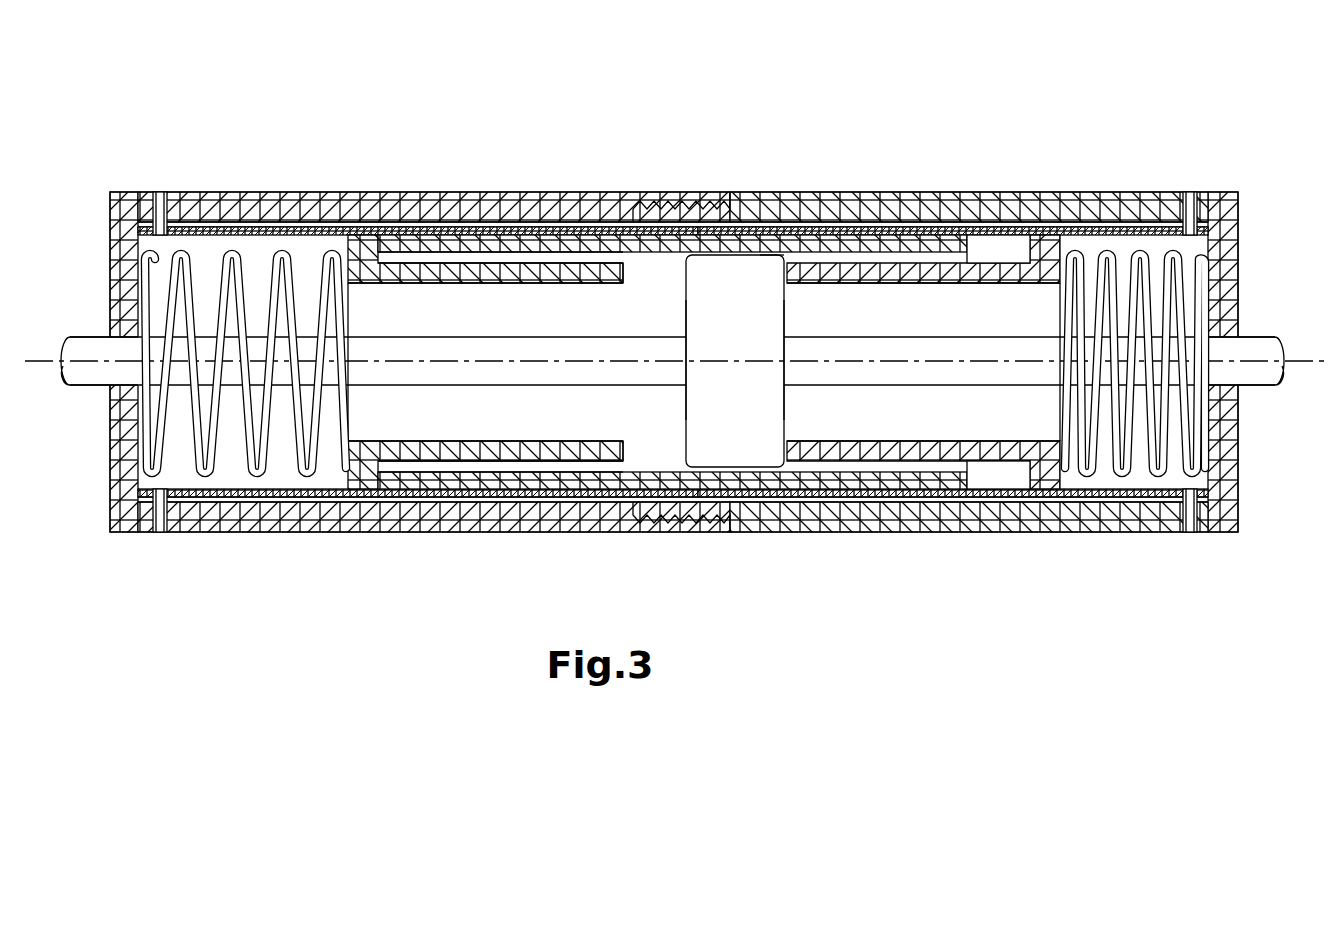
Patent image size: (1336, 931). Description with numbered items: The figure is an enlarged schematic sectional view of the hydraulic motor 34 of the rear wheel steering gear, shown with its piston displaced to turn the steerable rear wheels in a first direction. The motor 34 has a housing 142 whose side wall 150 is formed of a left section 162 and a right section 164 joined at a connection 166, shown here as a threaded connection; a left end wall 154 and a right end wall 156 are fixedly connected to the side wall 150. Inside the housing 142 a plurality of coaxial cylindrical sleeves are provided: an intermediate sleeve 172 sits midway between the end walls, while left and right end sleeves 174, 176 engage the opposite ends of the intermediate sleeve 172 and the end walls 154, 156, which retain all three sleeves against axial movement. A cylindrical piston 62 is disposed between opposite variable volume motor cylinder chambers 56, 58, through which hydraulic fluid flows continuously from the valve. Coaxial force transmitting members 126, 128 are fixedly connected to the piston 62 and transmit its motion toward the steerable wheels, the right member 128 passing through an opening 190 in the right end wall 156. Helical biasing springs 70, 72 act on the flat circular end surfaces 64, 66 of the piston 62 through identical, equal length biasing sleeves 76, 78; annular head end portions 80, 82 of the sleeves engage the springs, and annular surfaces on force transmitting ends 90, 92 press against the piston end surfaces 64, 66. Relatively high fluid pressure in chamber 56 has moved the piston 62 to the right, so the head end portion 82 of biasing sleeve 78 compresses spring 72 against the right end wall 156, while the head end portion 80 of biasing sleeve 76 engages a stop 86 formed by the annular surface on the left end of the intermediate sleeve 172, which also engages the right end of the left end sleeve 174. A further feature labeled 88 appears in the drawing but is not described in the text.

The hydraulic motor 34 is at (103, 139).
The variable volume motor cylinder chamber 56 is at (203, 250).
The variable volume motor cylinder chamber 58 is at (1141, 474).
The piston 62 is at (750, 245).
The end surface 64 is at (690, 427).
The end surface 66 is at (812, 425).
The helical biasing spring 70 is at (233, 268).
The helical biasing spring 72 is at (1176, 270).
The biasing sleeve 76 is at (500, 474).
The biasing sleeve 78 is at (1000, 466).
The head end portion 80 is at (350, 478).
The head end portion 82 is at (1050, 472).
The stop 86 is at (368, 492).
The second recess 88 is at (988, 492).
The force transmitting end 90 is at (628, 270).
The force transmitting end 92 is at (776, 262).
The force transmitting member 126 is at (92, 378).
The force transmitting member 128 is at (1258, 348).
The housing 142 is at (1105, 190).
The side wall 150 is at (940, 196).
The left end wall 154 is at (125, 293).
The right end wall 156 is at (1230, 220).
The left section 162 is at (391, 203).
The right section 164 is at (1036, 203).
The connection 166 is at (688, 205).
The intermediate sleeve 172 is at (590, 484).
The left end sleeve 174 is at (218, 493).
The right end sleeve 176 is at (1160, 492).
The opening 190 is at (1240, 384).